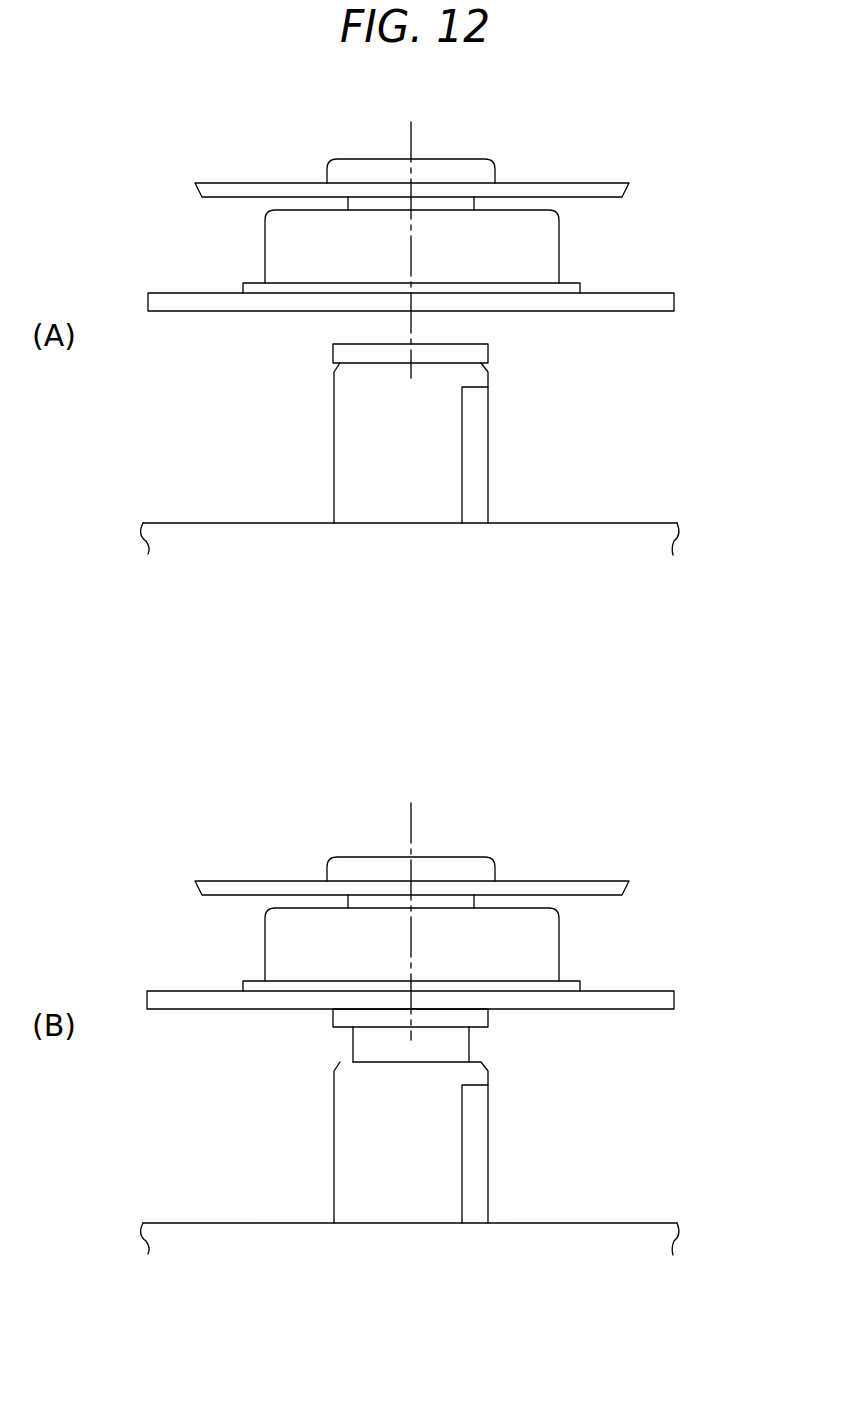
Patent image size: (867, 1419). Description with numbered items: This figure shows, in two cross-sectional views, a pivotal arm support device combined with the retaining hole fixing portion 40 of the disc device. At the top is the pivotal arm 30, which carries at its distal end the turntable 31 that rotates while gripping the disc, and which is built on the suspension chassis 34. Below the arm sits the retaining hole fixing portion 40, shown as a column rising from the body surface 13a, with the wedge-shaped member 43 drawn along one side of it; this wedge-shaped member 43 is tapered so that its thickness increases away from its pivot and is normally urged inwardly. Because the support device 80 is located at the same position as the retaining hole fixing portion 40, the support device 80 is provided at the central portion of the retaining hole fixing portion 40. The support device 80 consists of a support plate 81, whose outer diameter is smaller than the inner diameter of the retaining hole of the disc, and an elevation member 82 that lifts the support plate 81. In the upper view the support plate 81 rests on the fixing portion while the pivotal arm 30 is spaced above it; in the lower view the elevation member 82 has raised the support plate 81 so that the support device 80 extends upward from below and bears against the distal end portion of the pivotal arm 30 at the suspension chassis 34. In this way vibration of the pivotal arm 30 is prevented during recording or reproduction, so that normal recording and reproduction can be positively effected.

The pivotal arm 30 is at (173, 180).
The turntable 31 is at (590, 185).
The suspension chassis 34 is at (642, 293).
The support device 80 is at (428, 716).
The support plate 81 is at (343, 353).
The elevation member 82 is at (355, 1047).
The retaining hole fixing portion 40 is at (290, 444).
The wedge-shaped member 43 is at (477, 443).
The base surface 13a is at (625, 523).